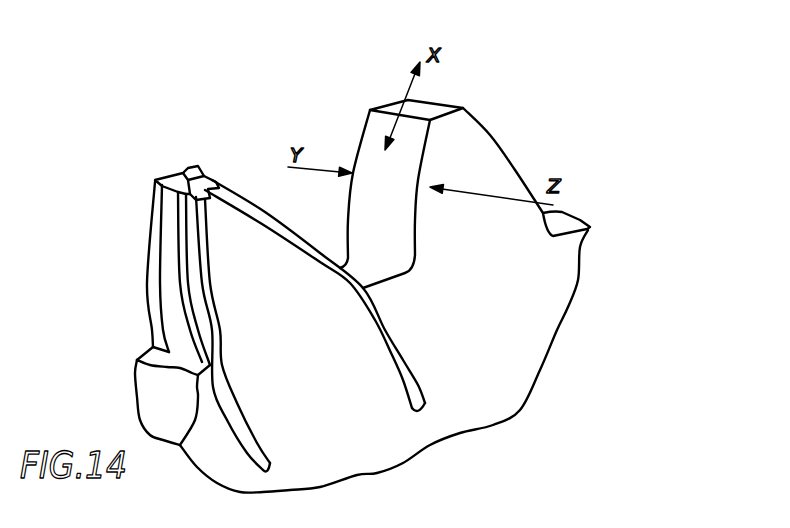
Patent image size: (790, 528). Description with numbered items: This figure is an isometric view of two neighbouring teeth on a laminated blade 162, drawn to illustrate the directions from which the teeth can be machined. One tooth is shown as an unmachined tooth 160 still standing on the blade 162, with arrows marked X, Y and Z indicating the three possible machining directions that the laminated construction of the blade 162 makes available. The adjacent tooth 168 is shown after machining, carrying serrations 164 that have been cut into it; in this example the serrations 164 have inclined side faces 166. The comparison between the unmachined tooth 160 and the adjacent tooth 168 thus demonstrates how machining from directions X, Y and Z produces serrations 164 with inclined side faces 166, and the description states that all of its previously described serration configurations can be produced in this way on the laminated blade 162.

The unmachined tooth 160 is at (506, 140).
The blade 162 is at (513, 338).
The serrations 164 is at (167, 210).
The inclined side faces 166 is at (187, 304).
The adjacent tooth 168 is at (236, 236).